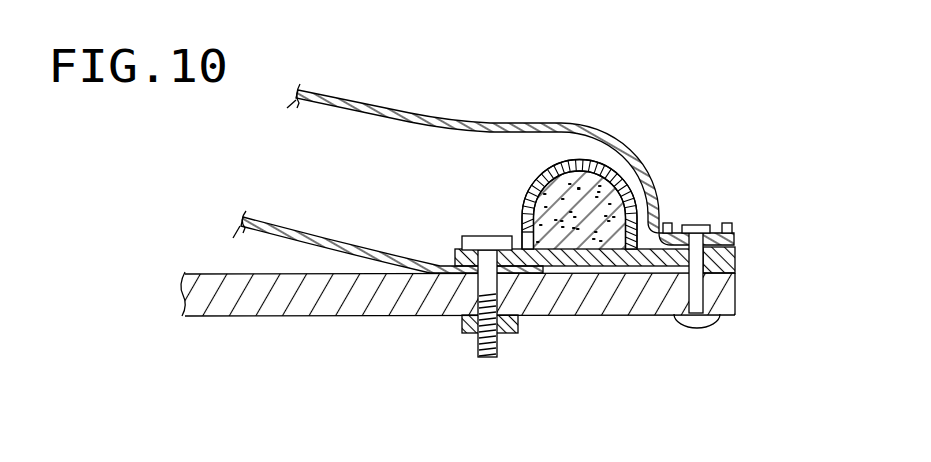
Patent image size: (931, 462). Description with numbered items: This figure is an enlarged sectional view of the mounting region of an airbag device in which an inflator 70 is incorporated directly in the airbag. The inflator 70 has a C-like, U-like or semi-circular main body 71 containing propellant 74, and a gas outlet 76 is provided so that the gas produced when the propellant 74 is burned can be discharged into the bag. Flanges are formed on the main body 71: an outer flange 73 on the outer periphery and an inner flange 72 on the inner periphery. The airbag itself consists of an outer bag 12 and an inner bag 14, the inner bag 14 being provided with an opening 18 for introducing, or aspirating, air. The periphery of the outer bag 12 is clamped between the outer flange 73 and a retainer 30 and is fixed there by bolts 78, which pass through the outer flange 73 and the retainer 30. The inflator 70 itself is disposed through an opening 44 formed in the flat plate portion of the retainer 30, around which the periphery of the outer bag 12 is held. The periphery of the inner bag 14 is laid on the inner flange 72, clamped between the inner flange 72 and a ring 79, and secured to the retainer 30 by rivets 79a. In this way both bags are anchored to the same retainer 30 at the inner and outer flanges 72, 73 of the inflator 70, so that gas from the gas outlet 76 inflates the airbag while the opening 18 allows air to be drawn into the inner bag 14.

The outer bag 12 is at (287, 228).
The inner bag 14 is at (371, 105).
The opening 18 is at (735, 245).
The retainer 30 is at (318, 316).
The opening 44 is at (735, 298).
The inflator 70 is at (525, 175).
The main body 71 is at (557, 160).
The inner flange 72 is at (735, 263).
The outer flange 73 is at (456, 258).
The propellant 74 is at (580, 243).
The gas outlet 76 is at (524, 207).
The bolts 78 is at (488, 358).
The ring 79 is at (733, 224).
The rivets 79a is at (698, 329).